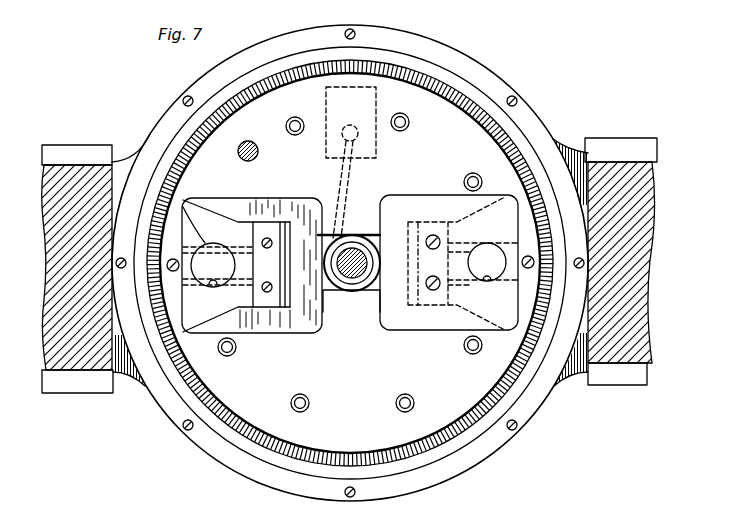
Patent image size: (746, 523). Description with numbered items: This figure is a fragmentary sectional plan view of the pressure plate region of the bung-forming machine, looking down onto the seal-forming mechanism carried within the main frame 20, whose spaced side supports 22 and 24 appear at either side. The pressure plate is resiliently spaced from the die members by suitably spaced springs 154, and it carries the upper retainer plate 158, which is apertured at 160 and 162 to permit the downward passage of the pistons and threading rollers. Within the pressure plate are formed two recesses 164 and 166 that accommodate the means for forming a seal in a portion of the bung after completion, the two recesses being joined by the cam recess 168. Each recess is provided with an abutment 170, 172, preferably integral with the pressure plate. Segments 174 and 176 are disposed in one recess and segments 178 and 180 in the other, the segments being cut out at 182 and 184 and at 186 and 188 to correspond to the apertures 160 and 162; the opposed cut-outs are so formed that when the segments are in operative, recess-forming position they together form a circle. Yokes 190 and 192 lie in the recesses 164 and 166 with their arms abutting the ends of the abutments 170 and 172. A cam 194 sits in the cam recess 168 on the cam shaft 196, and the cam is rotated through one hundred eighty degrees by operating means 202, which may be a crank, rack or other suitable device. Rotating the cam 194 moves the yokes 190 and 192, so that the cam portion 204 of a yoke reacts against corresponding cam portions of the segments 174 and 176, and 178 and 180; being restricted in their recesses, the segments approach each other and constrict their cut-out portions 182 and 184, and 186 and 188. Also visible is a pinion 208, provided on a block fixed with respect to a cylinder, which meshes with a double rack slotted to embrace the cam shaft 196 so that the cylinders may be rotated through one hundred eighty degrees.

The main frame 20 is at (42, 392).
The side support 22 is at (622, 381).
The side support 24 is at (77, 384).
The spring 154 is at (295, 117).
The upper retainer plate 158 is at (412, 207).
The aperture 160 is at (500, 245).
The aperture 162 is at (214, 258).
The recess 164 is at (438, 202).
The recess 166 is at (270, 208).
The cam recess 168 is at (342, 233).
The abutment 170 is at (432, 303).
The abutment 172 is at (271, 227).
The segment 174 is at (493, 198).
The segment 176 is at (507, 307).
The segment 178 is at (200, 215).
The segment 180 is at (193, 320).
The cut out portion 182 is at (486, 243).
The cut out portion 184 is at (488, 280).
The cut out portion 186 is at (173, 180).
The cut out portion 188 is at (216, 284).
The yoke 190 is at (390, 207).
The yoke 192 is at (280, 331).
The cam 194 is at (362, 292).
The cam shaft 196 is at (347, 278).
The cam operating means 202 is at (376, 113).
The cam portion 204 is at (467, 303).
The pinion 208 is at (205, 333).